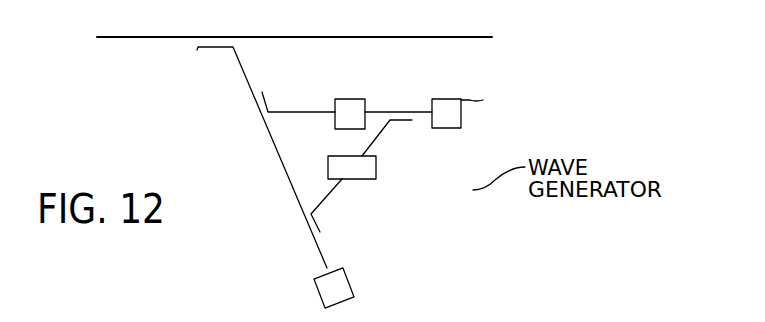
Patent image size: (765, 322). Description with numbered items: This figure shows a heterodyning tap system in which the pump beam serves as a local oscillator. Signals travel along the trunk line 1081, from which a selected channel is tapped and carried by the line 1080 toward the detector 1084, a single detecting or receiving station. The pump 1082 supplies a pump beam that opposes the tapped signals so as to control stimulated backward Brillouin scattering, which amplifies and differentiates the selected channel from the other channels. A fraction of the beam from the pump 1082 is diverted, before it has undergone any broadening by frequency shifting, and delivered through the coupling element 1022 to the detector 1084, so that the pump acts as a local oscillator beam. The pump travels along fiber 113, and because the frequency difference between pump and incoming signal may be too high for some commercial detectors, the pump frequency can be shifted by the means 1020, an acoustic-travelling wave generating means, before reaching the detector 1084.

The trunk line 1081 is at (183, 35).
The inclined conduit / pipe 1080 is at (203, 40).
The flow control element 1022 is at (354, 99).
The pump 1082 is at (461, 99).
The fiber 113 is at (378, 132).
The frequency shifting means 1020 is at (372, 179).
The detector 1084 is at (346, 268).